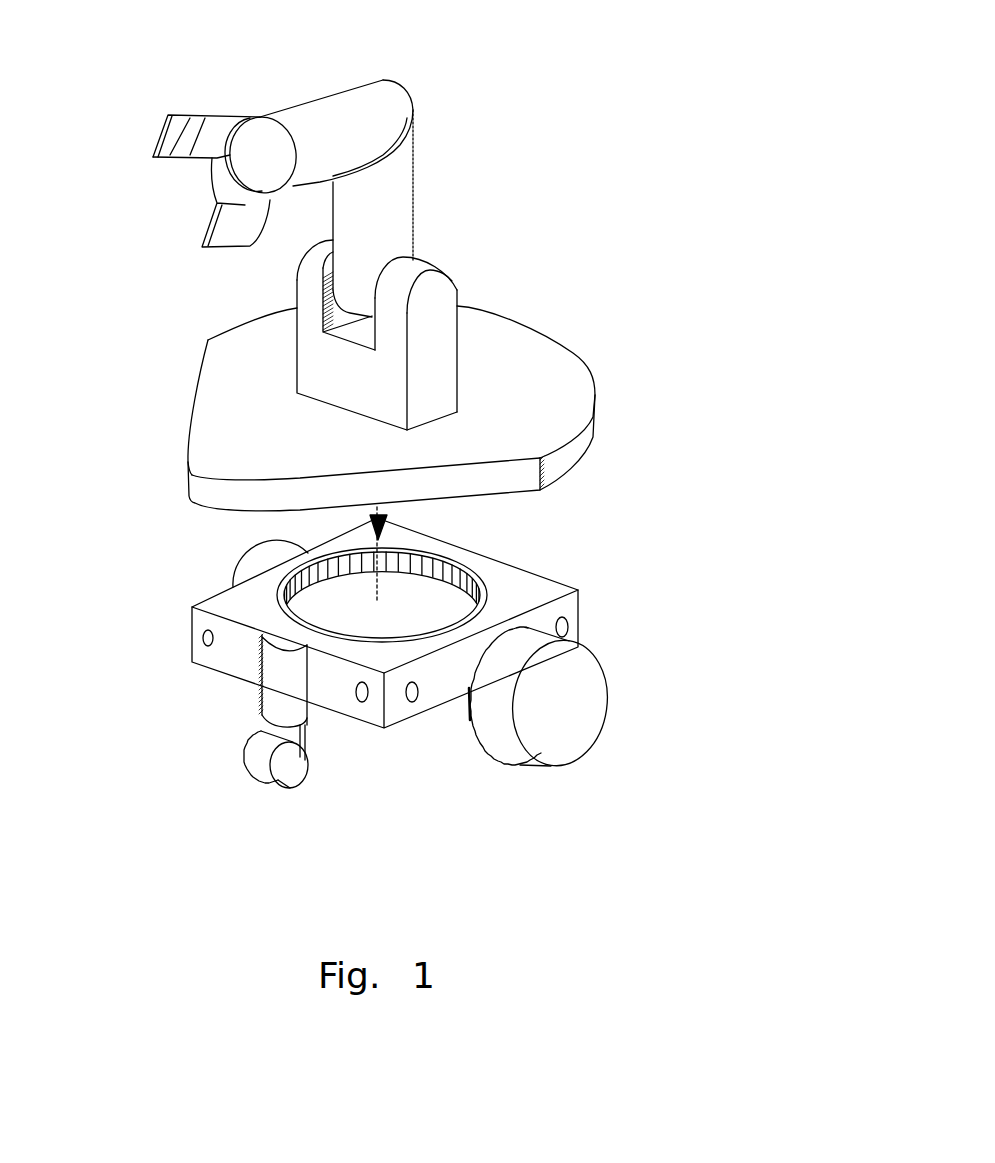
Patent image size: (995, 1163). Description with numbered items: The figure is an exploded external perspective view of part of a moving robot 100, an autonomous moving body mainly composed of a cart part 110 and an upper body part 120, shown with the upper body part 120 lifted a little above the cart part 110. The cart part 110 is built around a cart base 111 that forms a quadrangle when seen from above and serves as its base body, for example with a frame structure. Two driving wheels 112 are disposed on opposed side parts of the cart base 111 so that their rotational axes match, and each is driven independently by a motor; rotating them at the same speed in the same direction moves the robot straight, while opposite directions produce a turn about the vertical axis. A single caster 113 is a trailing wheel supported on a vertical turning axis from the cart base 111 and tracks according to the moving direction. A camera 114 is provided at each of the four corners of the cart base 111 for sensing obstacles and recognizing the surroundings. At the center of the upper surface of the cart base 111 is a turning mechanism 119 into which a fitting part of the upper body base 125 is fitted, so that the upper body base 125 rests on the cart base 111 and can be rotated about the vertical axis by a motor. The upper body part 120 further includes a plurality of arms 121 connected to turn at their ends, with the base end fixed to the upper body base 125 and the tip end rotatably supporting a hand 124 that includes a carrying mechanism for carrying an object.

The moving robot 100 is at (404, 441).
The cart part 110 is at (712, 520).
The cart base 111 is at (223, 663).
The driving wheels 112 is at (252, 570).
The caster 113 is at (290, 772).
The camera 114 is at (190, 630).
The turning mechanism 119 is at (483, 577).
The upper body part 120 is at (712, 85).
The arms 121 is at (382, 117).
The hand 124 is at (182, 113).
The upper body base 125 is at (218, 402).